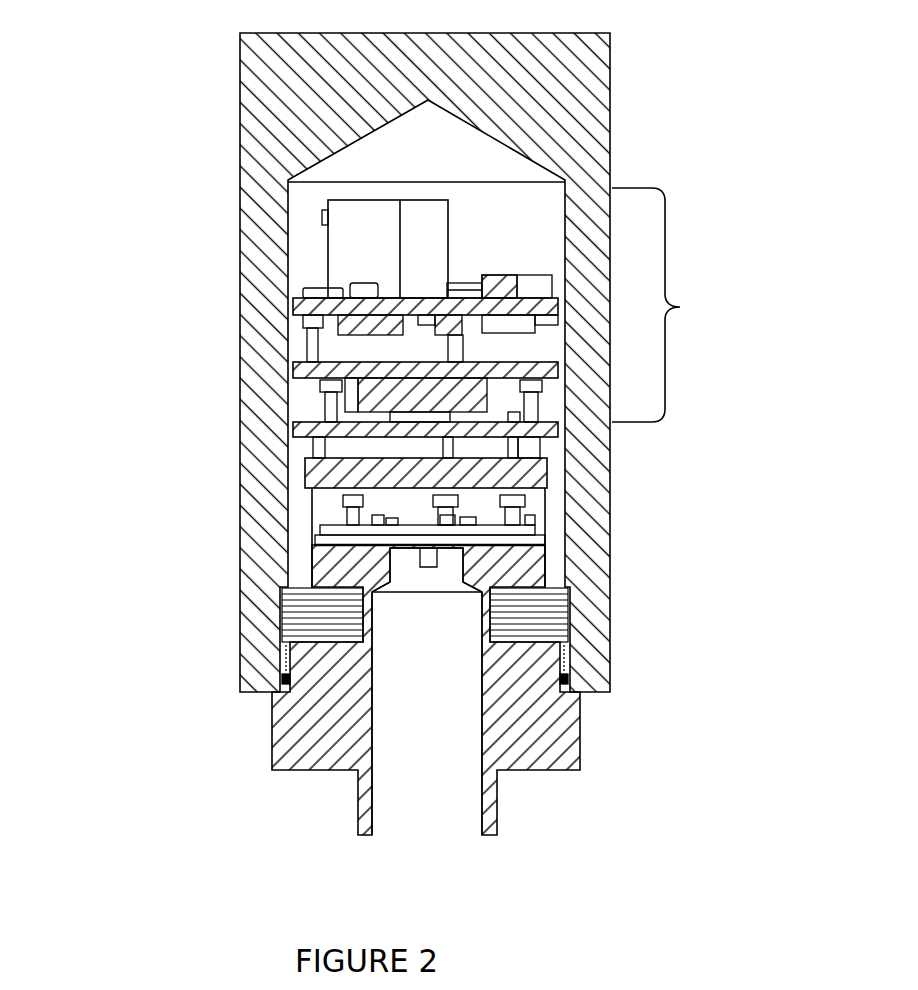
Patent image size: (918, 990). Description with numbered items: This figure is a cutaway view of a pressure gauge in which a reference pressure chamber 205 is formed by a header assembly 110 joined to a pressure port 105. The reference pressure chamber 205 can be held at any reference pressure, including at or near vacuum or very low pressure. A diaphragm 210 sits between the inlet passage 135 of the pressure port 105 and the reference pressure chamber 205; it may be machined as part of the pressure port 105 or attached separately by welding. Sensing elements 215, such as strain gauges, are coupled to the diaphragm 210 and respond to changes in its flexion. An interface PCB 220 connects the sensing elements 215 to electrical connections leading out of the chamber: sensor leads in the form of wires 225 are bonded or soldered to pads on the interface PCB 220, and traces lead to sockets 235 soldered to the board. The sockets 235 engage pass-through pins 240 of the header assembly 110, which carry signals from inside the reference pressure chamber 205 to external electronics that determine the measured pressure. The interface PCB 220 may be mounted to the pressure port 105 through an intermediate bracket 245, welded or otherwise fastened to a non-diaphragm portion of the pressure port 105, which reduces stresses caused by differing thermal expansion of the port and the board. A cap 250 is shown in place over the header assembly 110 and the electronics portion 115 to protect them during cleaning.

The pressure port 105 is at (260, 756).
The header assembly 110 is at (306, 512).
The electronics portion 115 is at (547, 323).
The inlet passage 135 is at (435, 836).
The reference pressure chamber 205 is at (320, 490).
The diaphragm 210 is at (443, 553).
The sensing elements 215 is at (380, 552).
The interface PCB 220 is at (541, 533).
The wires 225 is at (477, 515).
The sockets 235 is at (538, 500).
The pins 240 is at (527, 491).
The bracket 245 is at (308, 545).
The cap 250 is at (613, 667).